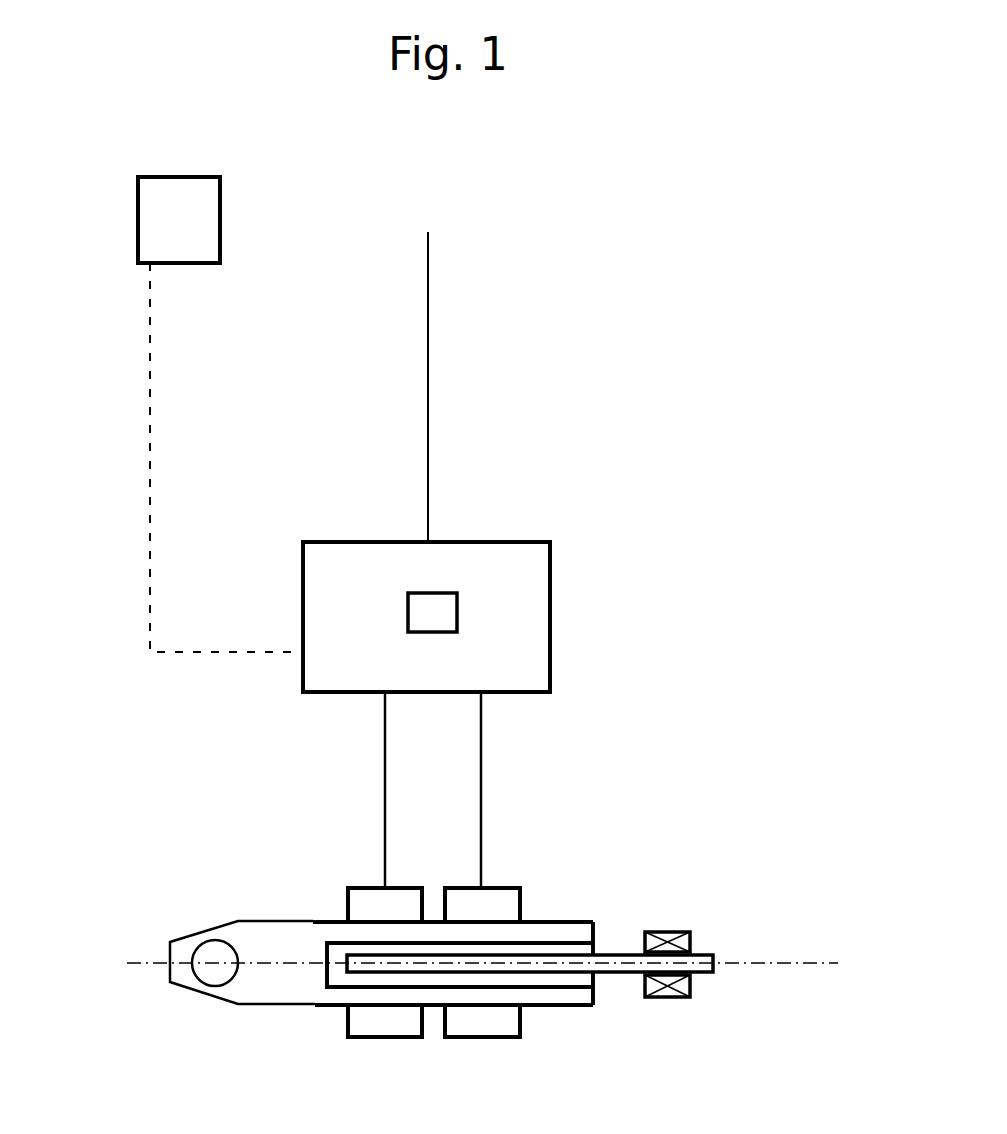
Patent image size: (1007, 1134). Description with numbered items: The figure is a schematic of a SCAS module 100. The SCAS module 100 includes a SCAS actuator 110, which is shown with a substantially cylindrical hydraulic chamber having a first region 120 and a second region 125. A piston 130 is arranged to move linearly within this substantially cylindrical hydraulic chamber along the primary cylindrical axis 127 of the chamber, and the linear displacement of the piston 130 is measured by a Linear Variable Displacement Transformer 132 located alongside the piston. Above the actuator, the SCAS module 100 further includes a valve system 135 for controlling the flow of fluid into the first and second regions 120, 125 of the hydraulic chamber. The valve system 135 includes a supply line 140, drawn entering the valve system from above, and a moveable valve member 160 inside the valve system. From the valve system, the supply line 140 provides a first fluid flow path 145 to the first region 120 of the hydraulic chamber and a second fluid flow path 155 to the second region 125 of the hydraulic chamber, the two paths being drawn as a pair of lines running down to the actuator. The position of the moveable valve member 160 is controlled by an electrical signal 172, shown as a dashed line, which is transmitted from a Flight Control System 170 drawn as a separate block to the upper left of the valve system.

The SCAS module 100 is at (669, 165).
The SCAS actuator 110 is at (664, 861).
The first region 120 is at (358, 899).
The second region 125 is at (497, 898).
The primary cylindrical axis 127 is at (777, 965).
The piston 130 is at (622, 967).
The Linear Variable Displacement Transformer 132 is at (678, 995).
The valve system 135 is at (323, 623).
The supply line 140 is at (427, 420).
The first fluid flow path 145 is at (385, 812).
The second fluid flow path 155 is at (483, 772).
The moveable valve member 160 is at (430, 608).
The Flight Control System 170 is at (177, 202).
The electrical signal 172 is at (148, 438).